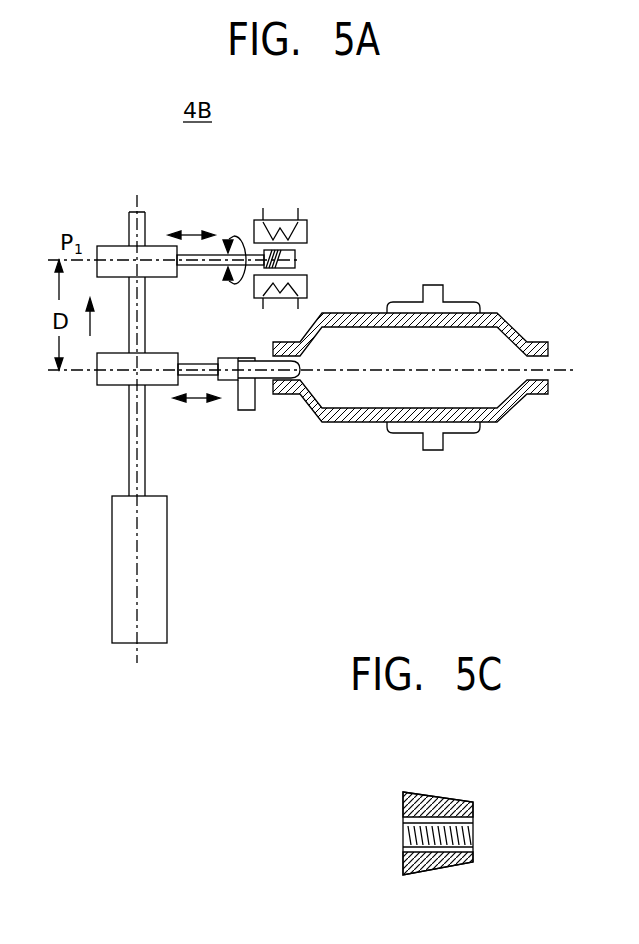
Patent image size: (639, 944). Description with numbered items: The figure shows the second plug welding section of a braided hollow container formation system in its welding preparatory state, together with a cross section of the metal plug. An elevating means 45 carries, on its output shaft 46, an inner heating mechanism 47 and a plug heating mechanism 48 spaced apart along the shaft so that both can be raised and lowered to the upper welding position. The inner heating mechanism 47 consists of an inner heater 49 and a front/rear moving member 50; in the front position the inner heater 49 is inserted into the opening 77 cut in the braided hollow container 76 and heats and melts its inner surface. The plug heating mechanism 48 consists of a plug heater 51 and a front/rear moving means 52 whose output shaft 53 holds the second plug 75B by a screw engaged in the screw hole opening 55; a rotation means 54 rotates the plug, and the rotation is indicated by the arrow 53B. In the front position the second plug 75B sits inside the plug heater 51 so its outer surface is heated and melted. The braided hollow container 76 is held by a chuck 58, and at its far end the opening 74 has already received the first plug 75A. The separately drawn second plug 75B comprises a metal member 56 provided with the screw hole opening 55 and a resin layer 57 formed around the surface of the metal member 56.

In FIG. 5A, the elevating means 45 is at (112, 592).
In FIG. 5A, the output shaft 46 is at (129, 472).
In FIG. 5A, the inner heating mechanism 47 is at (86, 404).
In FIG. 5A, the plug heating mechanism 48 is at (101, 237).
In FIG. 5A, the inner heater 49 is at (240, 410).
In FIG. 5A, the front/rear moving member 50 is at (158, 386).
In FIG. 5A, the plug heater 51 is at (305, 220).
In FIG. 5A, the front/rear moving means 52 is at (157, 246).
In FIG. 5A, the output shaft 53 is at (222, 255).
In FIG. 5A, the rotation direction 53B is at (246, 286).
In FIG. 5A, the rotation means 54 is at (247, 238).
In FIG. 5A, the chuck 58 is at (434, 450).
In FIG. 5A, the opening 74 is at (549, 361).
In FIG. 5A, the first plug 75A is at (549, 374).
In FIG. 5A, the second plug 75B is at (296, 259).
In FIG. 5C, the second plug 75B is at (384, 786).
In FIG. 5A, the braided hollow container 76 is at (355, 437).
In FIG. 5A, the opening 77 is at (299, 386).
In FIG. 5C, the screw hole opening 55 is at (405, 838).
In FIG. 5C, the metal member 56 is at (450, 800).
In FIG. 5C, the resin layer 57 is at (433, 871).